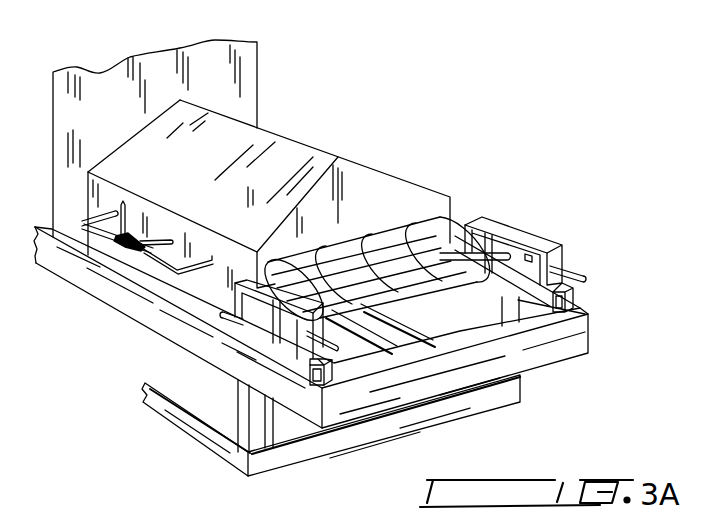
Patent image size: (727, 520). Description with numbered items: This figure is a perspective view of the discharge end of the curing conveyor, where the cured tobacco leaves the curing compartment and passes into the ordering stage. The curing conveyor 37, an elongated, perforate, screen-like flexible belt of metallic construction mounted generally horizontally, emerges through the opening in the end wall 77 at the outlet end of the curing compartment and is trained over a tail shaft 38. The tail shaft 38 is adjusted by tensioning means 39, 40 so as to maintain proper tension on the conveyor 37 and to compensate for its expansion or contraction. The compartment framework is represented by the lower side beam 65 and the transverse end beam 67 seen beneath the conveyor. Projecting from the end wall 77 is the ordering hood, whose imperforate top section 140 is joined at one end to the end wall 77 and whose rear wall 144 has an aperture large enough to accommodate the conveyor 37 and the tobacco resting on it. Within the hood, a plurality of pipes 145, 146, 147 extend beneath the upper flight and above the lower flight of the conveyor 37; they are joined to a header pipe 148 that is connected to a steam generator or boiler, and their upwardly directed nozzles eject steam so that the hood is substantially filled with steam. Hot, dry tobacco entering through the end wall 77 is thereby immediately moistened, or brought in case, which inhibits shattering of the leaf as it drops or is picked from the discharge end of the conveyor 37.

The end wall 77 is at (105, 75).
The imperforate top section 140 is at (137, 152).
The rear wall 144 is at (357, 178).
The pipe 145 is at (113, 213).
The pipe 146 is at (165, 238).
The pipe 147 is at (205, 255).
The header pipe 148 is at (135, 252).
The curing conveyor 37 is at (370, 245).
The tail shaft 38 is at (407, 297).
The tensioning means 39 is at (213, 327).
The tensioning means 40 is at (535, 238).
The lower side beam 65 is at (197, 428).
The transverse end beam 67 is at (440, 418).